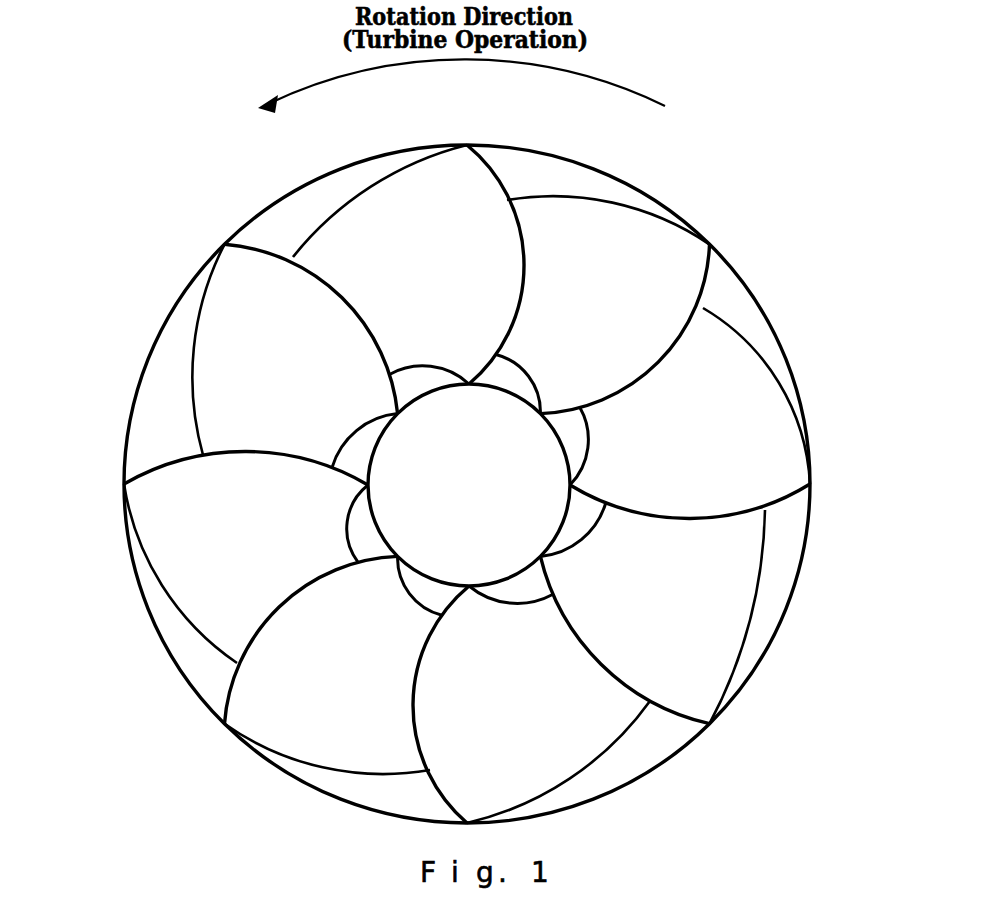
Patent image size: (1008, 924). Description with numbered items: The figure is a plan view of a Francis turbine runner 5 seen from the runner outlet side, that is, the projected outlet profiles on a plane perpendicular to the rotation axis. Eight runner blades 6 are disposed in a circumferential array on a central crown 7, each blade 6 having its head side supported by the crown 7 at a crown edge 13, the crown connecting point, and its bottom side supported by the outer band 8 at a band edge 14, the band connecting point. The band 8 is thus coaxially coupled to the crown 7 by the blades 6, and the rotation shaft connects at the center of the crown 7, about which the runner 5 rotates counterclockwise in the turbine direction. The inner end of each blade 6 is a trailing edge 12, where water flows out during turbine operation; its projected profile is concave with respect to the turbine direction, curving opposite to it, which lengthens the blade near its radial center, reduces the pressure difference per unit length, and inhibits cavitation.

The Francis turbine runner 5 is at (722, 110).
The runner blade 6 is at (377, 230).
The crown 7 is at (380, 537).
The band 8 is at (750, 323).
The trailing edge 12 is at (523, 257).
The crown edge 13 is at (390, 418).
The band edge 14 is at (470, 148).